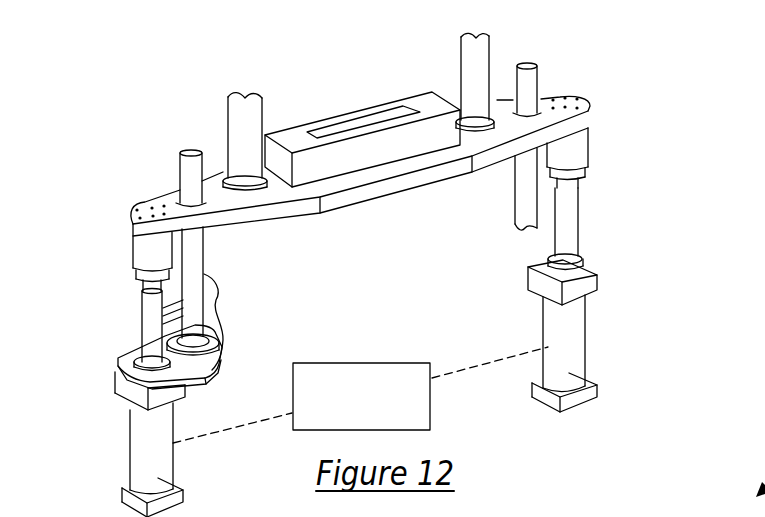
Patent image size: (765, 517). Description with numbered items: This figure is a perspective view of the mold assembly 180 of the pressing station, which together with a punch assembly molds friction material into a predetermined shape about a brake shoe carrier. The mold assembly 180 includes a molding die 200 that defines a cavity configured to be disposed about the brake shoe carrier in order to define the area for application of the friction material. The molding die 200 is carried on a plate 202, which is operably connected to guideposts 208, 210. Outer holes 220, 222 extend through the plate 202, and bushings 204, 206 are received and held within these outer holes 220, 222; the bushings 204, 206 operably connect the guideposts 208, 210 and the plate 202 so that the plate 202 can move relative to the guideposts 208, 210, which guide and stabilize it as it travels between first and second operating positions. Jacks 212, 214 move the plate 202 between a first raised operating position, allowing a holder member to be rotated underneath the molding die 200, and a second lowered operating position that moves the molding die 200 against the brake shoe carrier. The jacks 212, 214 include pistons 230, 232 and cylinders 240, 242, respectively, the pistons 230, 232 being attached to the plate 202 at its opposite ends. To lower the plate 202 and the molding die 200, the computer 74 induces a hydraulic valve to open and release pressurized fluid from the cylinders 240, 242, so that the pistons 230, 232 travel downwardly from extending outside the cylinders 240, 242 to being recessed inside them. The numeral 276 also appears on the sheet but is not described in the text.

The mold assembly 180 is at (172, 78).
The plate 202 is at (590, 107).
The molding die 200 is at (427, 102).
The guidepost 208 is at (190, 150).
The guidepost 210 is at (527, 63).
The outer hole 220 is at (173, 196).
The outer hole 222 is at (547, 110).
The piston 230 is at (153, 315).
The piston 232 is at (578, 222).
The bushing 204 is at (213, 240).
The bushing 206 is at (510, 164).
The jack 212 is at (134, 434).
The jack 214 is at (595, 315).
The cylinder 240 is at (140, 465).
The cylinder 242 is at (573, 357).
The computer 74 is at (358, 363).
The reference numeral 276 is at (630, 507).